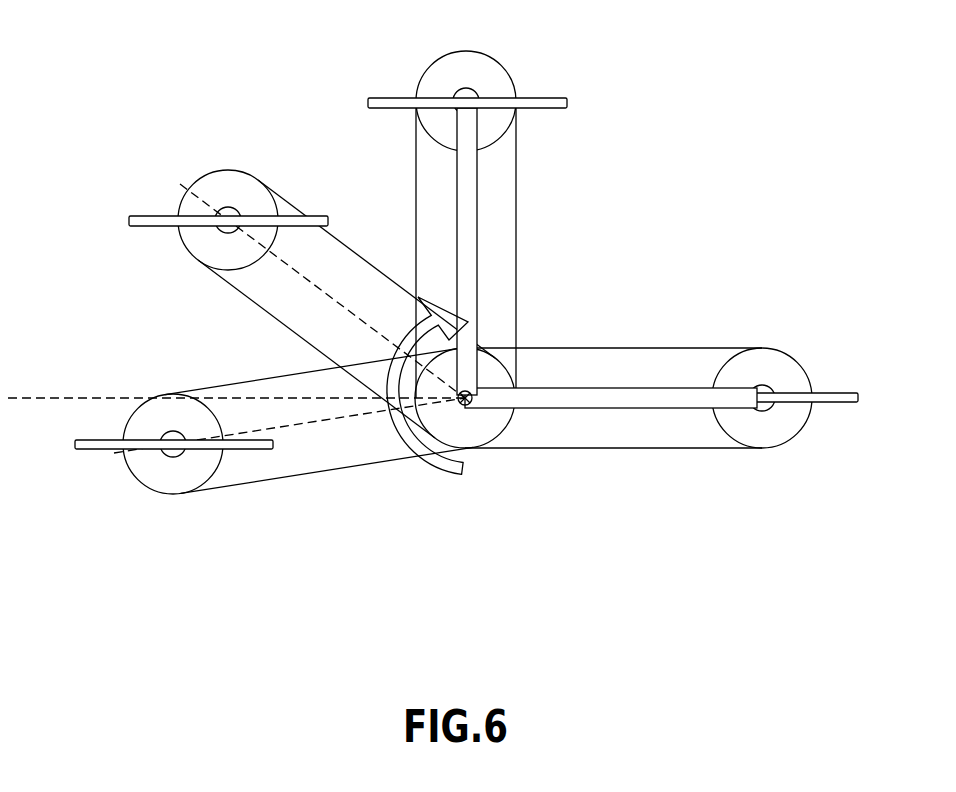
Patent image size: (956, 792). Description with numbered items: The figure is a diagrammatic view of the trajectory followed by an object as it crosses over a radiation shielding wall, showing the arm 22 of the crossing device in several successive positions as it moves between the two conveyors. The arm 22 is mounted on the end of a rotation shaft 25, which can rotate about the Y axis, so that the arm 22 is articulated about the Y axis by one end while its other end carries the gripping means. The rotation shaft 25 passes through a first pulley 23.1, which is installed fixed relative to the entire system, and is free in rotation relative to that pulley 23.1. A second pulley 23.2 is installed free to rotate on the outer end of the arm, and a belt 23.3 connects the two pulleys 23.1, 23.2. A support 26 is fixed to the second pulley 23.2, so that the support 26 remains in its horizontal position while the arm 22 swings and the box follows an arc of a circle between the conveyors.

The arm 22 is at (481, 213).
The first pulley 23.1 is at (498, 436).
The second pulley 23.2 is at (442, 75).
The belt 23.3 is at (674, 343).
The rotation shaft 25 is at (467, 406).
The support 26 is at (544, 86).
The Y axis Y is at (431, 437).